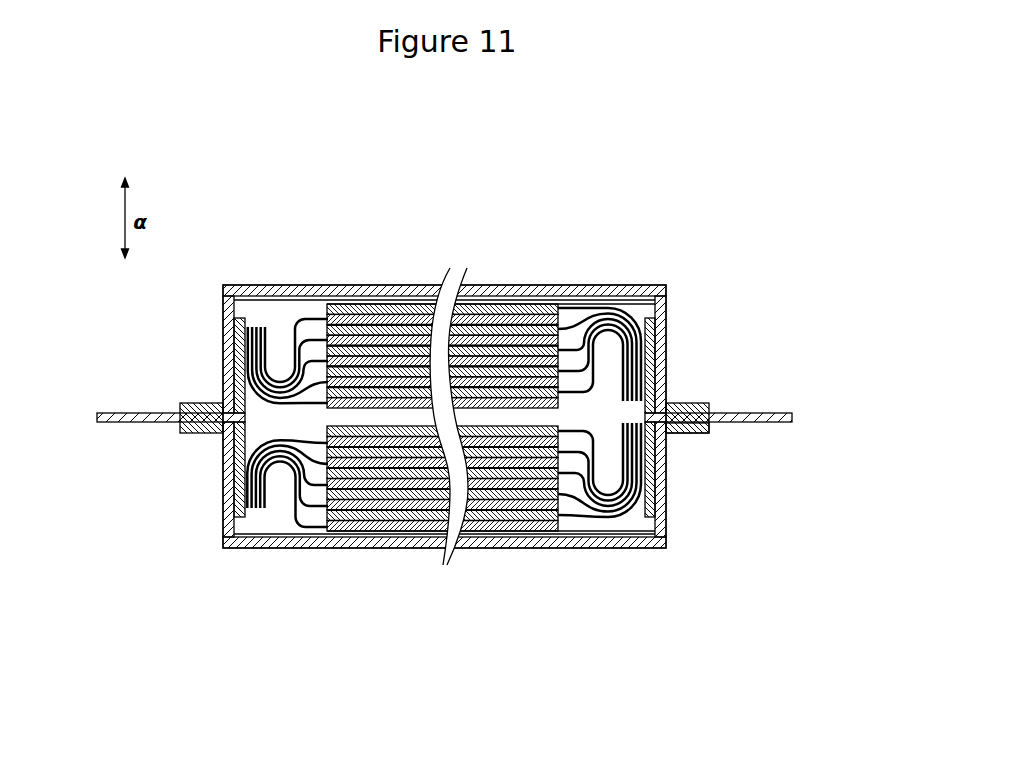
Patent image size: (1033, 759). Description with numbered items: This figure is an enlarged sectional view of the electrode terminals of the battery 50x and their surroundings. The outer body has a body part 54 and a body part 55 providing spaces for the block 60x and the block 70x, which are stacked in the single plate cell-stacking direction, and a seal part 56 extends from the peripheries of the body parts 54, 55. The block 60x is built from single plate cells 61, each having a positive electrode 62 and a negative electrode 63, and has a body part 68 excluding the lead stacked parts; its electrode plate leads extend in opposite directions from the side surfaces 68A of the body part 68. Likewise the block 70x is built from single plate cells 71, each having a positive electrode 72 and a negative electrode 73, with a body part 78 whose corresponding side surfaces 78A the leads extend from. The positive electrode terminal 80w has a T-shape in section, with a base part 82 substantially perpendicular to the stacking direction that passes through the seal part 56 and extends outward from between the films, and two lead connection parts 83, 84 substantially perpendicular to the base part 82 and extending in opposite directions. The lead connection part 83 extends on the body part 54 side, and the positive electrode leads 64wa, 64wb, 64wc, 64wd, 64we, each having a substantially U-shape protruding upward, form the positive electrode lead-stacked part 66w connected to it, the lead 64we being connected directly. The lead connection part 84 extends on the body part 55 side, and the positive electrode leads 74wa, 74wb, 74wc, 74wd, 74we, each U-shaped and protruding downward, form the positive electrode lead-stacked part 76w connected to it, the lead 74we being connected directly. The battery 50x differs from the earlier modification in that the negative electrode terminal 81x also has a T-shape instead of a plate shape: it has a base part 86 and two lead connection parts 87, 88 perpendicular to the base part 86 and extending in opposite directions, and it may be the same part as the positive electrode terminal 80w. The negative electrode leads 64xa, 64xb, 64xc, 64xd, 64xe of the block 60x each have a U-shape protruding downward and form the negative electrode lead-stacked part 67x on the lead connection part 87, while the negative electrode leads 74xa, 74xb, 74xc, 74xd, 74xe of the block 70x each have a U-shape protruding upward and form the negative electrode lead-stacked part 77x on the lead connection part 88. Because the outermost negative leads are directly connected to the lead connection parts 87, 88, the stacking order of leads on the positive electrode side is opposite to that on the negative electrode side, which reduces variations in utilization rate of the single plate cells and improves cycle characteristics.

The battery 50x is at (706, 129).
The body part 54 is at (668, 298).
The body part 55 is at (668, 538).
The seal part 56 is at (694, 404).
The base part 82 is at (704, 433).
The base part 86 is at (196, 432).
The block 60x is at (232, 300).
The block 70x is at (233, 534).
The single plate cells 61 is at (442, 295).
The positive electrode 62 is at (384, 303).
The negative electrode 63 is at (420, 303).
The body part 68 is at (492, 304).
The side surface 68A is at (318, 300).
The single plate cells 71 is at (442, 539).
The positive electrode 72 is at (387, 533).
The negative electrode 73 is at (420, 533).
The body part 78 is at (492, 534).
The lower separator extension 78A is at (318, 535).
The upper left tab bundle 67x is at (248, 274).
The tab 64xa is at (249, 326).
The tab 64xb is at (253, 326).
The tab 64xc is at (257, 326).
The tab 64xd is at (261, 326).
The tab 64xe is at (265, 326).
The positive electrode lead-stacked part 66w is at (639, 274).
The positive electrode lead 64wa is at (635, 312).
The positive electrode lead 64wb is at (618, 314).
The positive electrode lead 64wc is at (610, 322).
The positive electrode lead 64wd is at (602, 325).
The positive electrode lead 64we is at (595, 345).
The lower left tab bundle 77x is at (246, 569).
The tab 74xa is at (249, 510).
The tab 74xb is at (253, 510).
The tab 74xc is at (257, 510).
The tab 74xd is at (261, 510).
The tab 74xe is at (265, 510).
The positive electrode lead-stacked part 76w is at (628, 560).
The positive electrode lead 74wa is at (641, 505).
The positive electrode lead 74wb is at (627, 516).
The positive electrode lead 74wc is at (612, 517).
The positive electrode lead 74wd is at (604, 512).
The positive electrode lead 74we is at (595, 497).
The lead connection part 87 is at (236, 330).
The lead connection part 88 is at (238, 482).
The lead connection part 83 is at (653, 330).
The lead connection part 84 is at (654, 490).
The negative electrode terminal 81x is at (112, 405).
The positive electrode terminal 80w is at (780, 405).